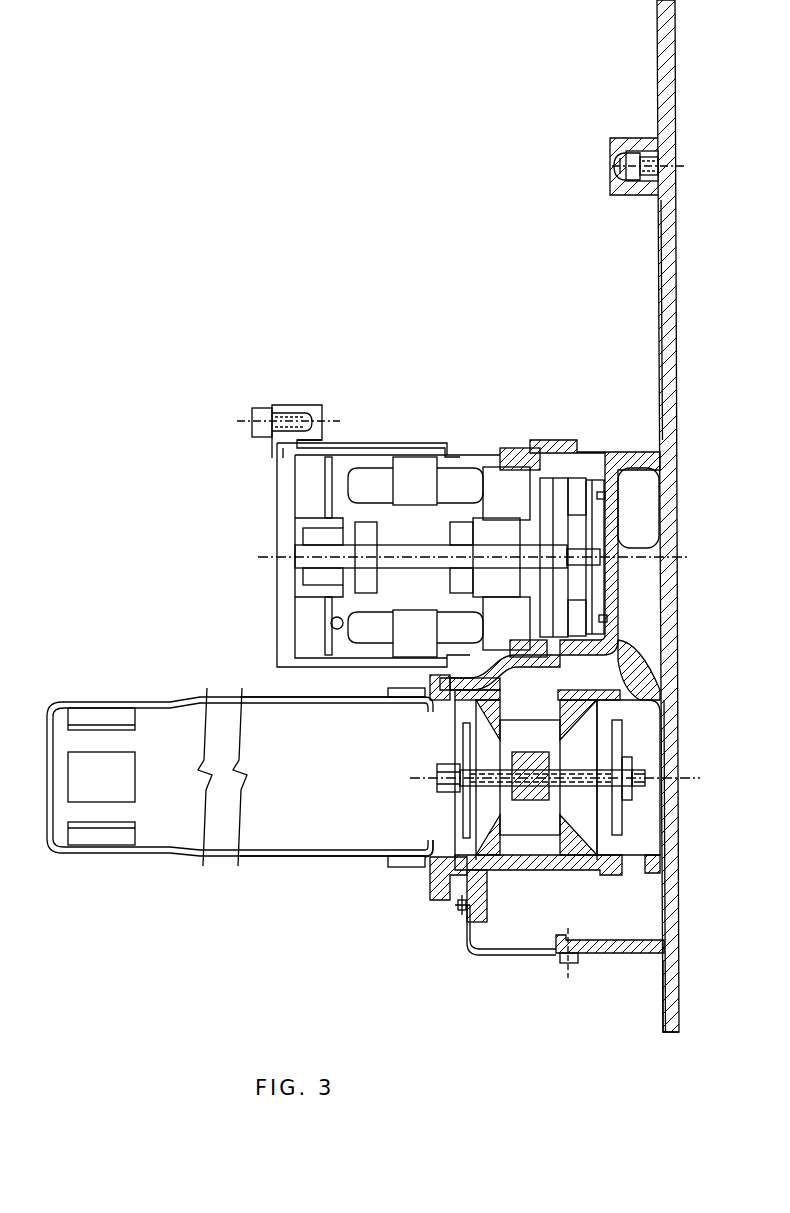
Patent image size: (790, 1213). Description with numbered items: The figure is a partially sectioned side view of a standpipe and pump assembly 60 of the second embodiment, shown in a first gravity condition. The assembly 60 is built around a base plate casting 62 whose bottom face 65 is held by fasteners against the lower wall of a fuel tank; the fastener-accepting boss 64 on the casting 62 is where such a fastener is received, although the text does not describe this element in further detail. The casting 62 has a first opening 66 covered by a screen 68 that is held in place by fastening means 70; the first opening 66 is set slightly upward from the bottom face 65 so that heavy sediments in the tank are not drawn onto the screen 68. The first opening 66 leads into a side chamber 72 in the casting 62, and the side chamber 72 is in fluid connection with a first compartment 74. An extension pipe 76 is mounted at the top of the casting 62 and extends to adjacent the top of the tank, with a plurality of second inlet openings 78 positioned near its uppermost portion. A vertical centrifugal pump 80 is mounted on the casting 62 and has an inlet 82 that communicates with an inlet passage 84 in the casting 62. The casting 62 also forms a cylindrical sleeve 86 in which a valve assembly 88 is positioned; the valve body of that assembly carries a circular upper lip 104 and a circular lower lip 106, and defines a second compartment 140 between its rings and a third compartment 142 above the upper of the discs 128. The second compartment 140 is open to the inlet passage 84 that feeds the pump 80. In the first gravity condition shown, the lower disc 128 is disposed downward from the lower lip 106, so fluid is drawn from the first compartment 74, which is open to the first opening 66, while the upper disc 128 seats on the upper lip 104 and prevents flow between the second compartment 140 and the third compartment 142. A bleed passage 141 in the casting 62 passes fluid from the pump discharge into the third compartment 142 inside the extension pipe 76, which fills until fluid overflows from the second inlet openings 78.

The standpipe and pump assembly 60 is at (442, 532).
The base plate casting 62 is at (677, 352).
The mounting boss 64 is at (622, 150).
The bottom face 65 is at (694, 996).
The first opening 66 is at (490, 940).
The screen 68 is at (470, 950).
The fastening means 70 is at (460, 905).
The side chamber 72 is at (645, 912).
The first compartment 74 is at (648, 822).
The extension pipe 76 is at (355, 858).
The second inlet openings 78 is at (75, 707).
The vertical centrifugal pump 80 is at (470, 455).
The inlet 82 is at (600, 540).
The inlet passage 84 is at (645, 496).
The cylindrical sleeve 86 is at (550, 850).
The valve assembly 88 is at (550, 725).
The circular upper lip 104 is at (470, 800).
The circular lower lip 106 is at (590, 703).
The discs 128 is at (462, 746).
The second compartment 140 is at (530, 840).
The bleed passage 141 is at (447, 702).
The third compartment 142 is at (295, 830).